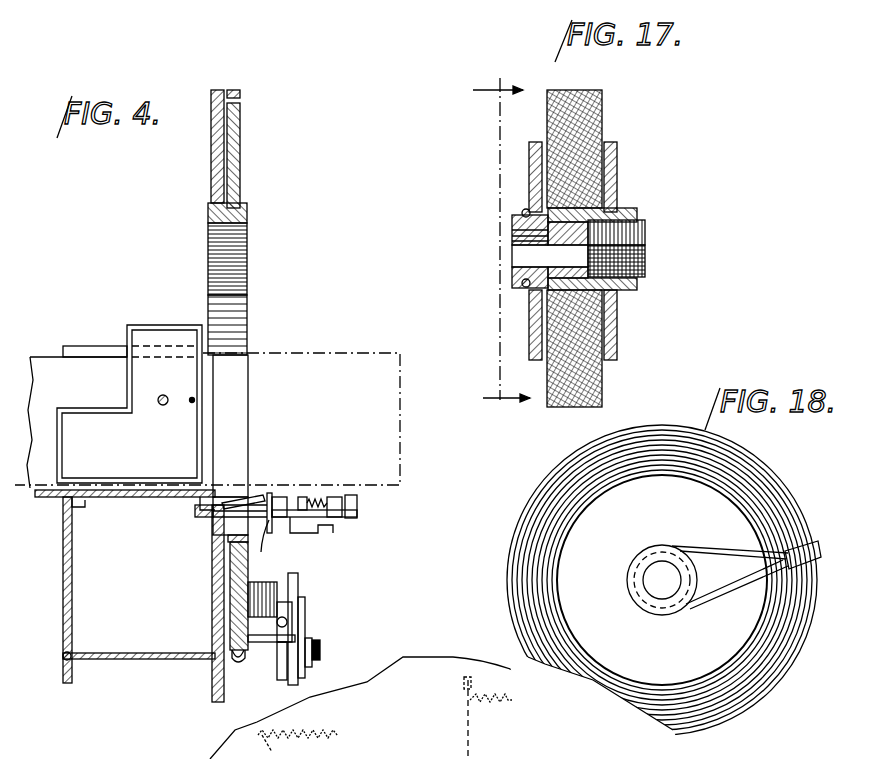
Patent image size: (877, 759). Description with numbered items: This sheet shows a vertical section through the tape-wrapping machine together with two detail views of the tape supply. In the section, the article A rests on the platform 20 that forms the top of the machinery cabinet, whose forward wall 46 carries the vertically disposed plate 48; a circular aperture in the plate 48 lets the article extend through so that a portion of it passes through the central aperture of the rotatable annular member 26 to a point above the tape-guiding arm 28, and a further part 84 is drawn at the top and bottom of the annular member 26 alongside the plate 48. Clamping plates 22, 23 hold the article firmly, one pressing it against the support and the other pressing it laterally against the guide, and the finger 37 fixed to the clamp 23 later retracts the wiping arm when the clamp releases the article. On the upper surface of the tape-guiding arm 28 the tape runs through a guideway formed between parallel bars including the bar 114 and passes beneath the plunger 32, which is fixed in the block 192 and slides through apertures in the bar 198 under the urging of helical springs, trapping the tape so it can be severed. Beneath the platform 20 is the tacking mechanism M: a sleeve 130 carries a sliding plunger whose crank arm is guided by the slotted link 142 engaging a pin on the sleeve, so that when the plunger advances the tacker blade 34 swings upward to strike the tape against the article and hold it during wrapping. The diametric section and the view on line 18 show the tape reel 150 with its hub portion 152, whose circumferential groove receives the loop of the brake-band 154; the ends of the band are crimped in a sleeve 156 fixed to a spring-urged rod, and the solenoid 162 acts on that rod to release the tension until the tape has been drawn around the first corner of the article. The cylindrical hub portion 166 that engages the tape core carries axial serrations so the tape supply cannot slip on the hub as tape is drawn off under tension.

In FIG. 4, the platform 20 is at (46, 498).
In FIG. 4, the clamping plate 22 is at (90, 352).
In FIG. 4, the clamping plate 23 is at (100, 420).
In FIG. 4, the rotatable annular member 26 is at (240, 155).
In FIG. 4, the tape-guiding arm 28 is at (340, 521).
In FIG. 4, the plunger 32 is at (317, 497).
In FIG. 4, the tacker blade 34 is at (276, 540).
In FIG. 4, the finger 37 is at (190, 402).
In FIG. 4, the forward wall 46 is at (212, 590).
In FIG. 4, the vertically disposed plate 48 is at (211, 150).
In FIG. 4, the cap 84 is at (238, 112).
In FIG. 4, the bar 114 is at (278, 497).
In FIG. 4, the sleeve 130 is at (195, 512).
In FIG. 4, the link 142 is at (222, 510).
In FIG. 4, the tape reel 150 is at (298, 582).
In FIG. 17, the tape reel 150 is at (607, 130).
In FIG. 18, the tape reel 150 is at (525, 503).
In FIG. 17, the hub portion 152 is at (533, 235).
In FIG. 18, the hub portion 152 is at (648, 562).
In FIG. 4, the brake-band 154 is at (283, 654).
In FIG. 17, the brake-band 154 is at (524, 285).
In FIG. 18, the brake-band 154 is at (702, 548).
In FIG. 18, the sleeve 156 is at (760, 582).
In FIG. 4, the solenoid 162 is at (258, 598).
In FIG. 17, the cylindrical hub portion 166 is at (607, 212).
In FIG. 4, the block 192 is at (358, 498).
In FIG. 4, the bar 198 is at (340, 497).
In FIG. 17, the section line 18 is at (501, 241).
In FIG. 4, the article A is at (325, 358).
In FIG. 4, the tacking mechanism M is at (263, 496).